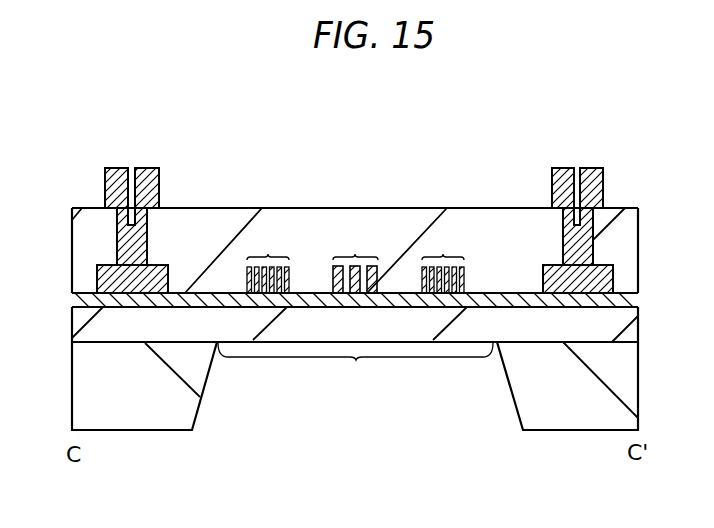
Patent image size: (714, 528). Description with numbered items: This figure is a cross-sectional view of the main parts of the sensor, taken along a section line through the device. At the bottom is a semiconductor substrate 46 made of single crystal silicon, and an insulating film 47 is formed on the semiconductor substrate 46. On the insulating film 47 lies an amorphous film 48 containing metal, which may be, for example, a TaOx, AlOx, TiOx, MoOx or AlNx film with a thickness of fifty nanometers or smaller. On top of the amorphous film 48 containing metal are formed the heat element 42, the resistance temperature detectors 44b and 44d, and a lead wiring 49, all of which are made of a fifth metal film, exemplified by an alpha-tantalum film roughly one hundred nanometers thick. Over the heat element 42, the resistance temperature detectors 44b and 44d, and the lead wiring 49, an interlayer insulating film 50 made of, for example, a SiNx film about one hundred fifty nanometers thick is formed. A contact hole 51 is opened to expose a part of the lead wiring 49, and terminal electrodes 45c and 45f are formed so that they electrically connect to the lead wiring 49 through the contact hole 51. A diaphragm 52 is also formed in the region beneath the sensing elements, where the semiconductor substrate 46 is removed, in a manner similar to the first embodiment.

The heat element 42 is at (355, 261).
The resistance temperature detector 44b is at (443, 261).
The resistance temperature detector 44d is at (268, 261).
The terminal electrode 45c is at (600, 167).
The terminal electrode 45f is at (157, 167).
The semiconductor substrate 46 is at (155, 432).
The insulating film 47 is at (72, 335).
The amorphous film containing metal 48 is at (72, 302).
The lead wiring 49 is at (167, 265).
The interlayer insulating film 50 is at (405, 213).
The contact hole 51 is at (128, 198).
The diaphragm 52 is at (355, 370).